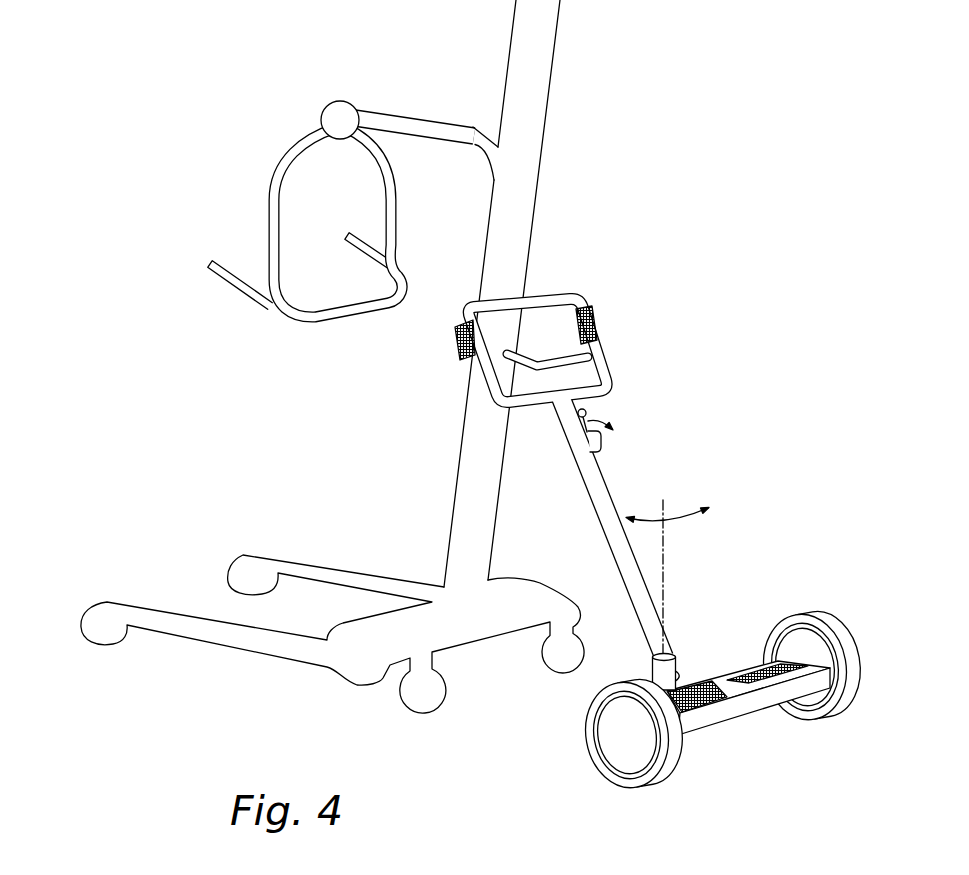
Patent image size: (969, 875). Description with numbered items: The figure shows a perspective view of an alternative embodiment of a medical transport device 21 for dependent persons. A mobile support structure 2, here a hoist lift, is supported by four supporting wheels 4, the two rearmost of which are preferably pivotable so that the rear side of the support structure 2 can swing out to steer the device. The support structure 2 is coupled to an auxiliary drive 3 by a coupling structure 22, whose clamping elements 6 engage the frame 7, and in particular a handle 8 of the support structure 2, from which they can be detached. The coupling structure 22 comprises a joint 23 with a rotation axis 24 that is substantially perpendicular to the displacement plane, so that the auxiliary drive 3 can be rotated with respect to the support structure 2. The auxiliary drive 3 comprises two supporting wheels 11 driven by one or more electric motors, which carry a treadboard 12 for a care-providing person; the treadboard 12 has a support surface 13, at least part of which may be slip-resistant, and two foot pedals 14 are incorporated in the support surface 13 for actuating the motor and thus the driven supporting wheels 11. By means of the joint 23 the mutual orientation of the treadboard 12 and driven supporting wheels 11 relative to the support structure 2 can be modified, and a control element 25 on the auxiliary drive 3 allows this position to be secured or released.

The mobile support structure 2 is at (249, 178).
The auxiliary drive 3 is at (734, 691).
The supporting wheels 4 is at (248, 573).
The clamping elements 6 is at (589, 323).
The frame 7 is at (529, 154).
The handle 8 is at (553, 293).
The supporting wheels 11 is at (627, 737).
The treadboard 12 is at (747, 707).
The support surface 13 is at (717, 687).
The foot pedals 14 is at (790, 681).
The medical transport device 21 is at (721, 208).
The coupling structure 22 is at (598, 488).
The joint 23 is at (651, 674).
The rotation axis 24 is at (666, 557).
The control element 25 is at (589, 411).